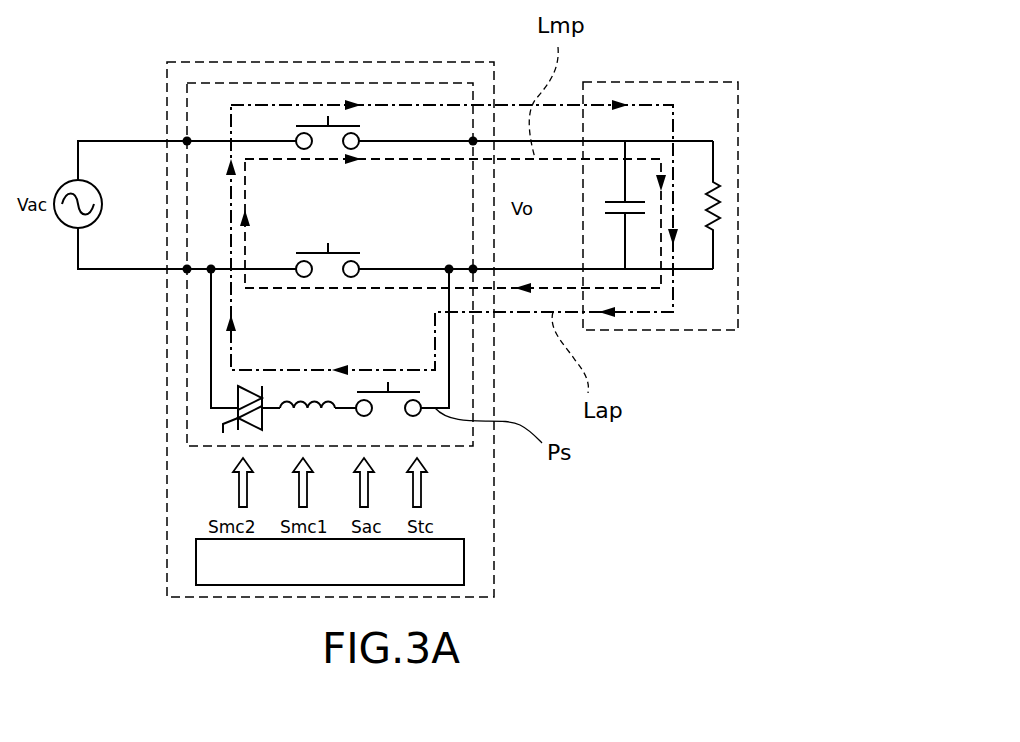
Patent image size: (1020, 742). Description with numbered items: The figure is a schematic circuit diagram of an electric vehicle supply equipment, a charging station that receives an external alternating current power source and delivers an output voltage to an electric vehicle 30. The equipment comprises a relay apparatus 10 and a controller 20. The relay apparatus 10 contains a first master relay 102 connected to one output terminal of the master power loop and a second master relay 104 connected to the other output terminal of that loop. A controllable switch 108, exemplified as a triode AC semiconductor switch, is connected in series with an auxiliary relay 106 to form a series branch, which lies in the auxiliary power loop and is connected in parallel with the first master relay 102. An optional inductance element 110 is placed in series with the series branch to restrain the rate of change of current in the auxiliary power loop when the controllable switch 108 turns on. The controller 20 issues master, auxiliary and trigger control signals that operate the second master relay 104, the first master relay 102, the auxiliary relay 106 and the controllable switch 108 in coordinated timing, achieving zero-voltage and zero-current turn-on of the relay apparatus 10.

The relay apparatus 10 is at (423, 93).
The controller 20 is at (453, 563).
The electric vehicle 30 is at (703, 90).
The first master relay 102 is at (340, 250).
The second master relay 104 is at (302, 120).
The auxiliary relay 106 is at (390, 413).
The controllable switch 108 is at (237, 400).
The inductance element 110 is at (308, 397).